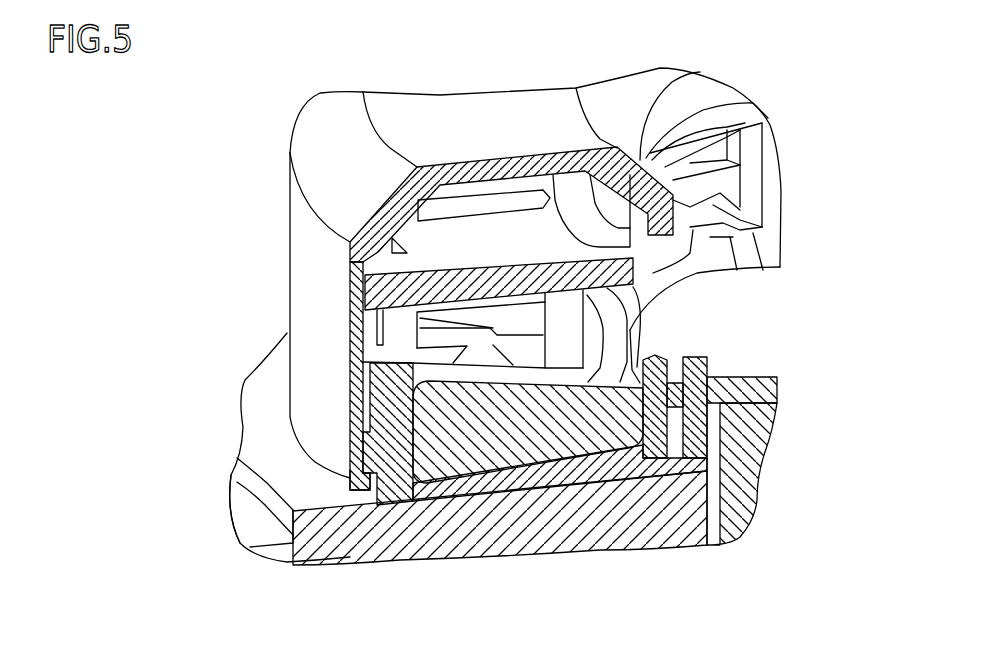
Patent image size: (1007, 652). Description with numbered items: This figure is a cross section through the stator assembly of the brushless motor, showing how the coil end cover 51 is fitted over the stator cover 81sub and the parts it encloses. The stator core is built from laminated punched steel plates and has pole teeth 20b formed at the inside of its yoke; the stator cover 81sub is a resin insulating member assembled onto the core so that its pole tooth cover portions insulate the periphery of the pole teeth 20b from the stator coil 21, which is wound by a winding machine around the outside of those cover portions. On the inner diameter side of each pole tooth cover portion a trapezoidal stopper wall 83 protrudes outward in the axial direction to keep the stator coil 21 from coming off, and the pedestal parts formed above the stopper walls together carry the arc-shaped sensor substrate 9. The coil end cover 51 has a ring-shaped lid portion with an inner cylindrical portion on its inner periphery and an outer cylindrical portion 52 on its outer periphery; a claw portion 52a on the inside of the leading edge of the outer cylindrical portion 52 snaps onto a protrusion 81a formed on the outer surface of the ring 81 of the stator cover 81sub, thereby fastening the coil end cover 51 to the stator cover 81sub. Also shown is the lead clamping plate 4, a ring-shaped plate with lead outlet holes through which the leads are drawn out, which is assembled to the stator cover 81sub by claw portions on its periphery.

The coil end cover 51 is at (515, 110).
The outer cylindrical portion 52 is at (313, 283).
The claw portion 52a is at (350, 493).
The lead clamping plate 4 is at (423, 272).
The ring 81 is at (385, 392).
The protrusion 81a is at (353, 467).
The stator coil 21 is at (538, 448).
The stator cover 81sub is at (683, 455).
The stopper wall 83 is at (651, 356).
The sensor substrate 9 is at (757, 347).
The pole teeth 20b is at (605, 533).